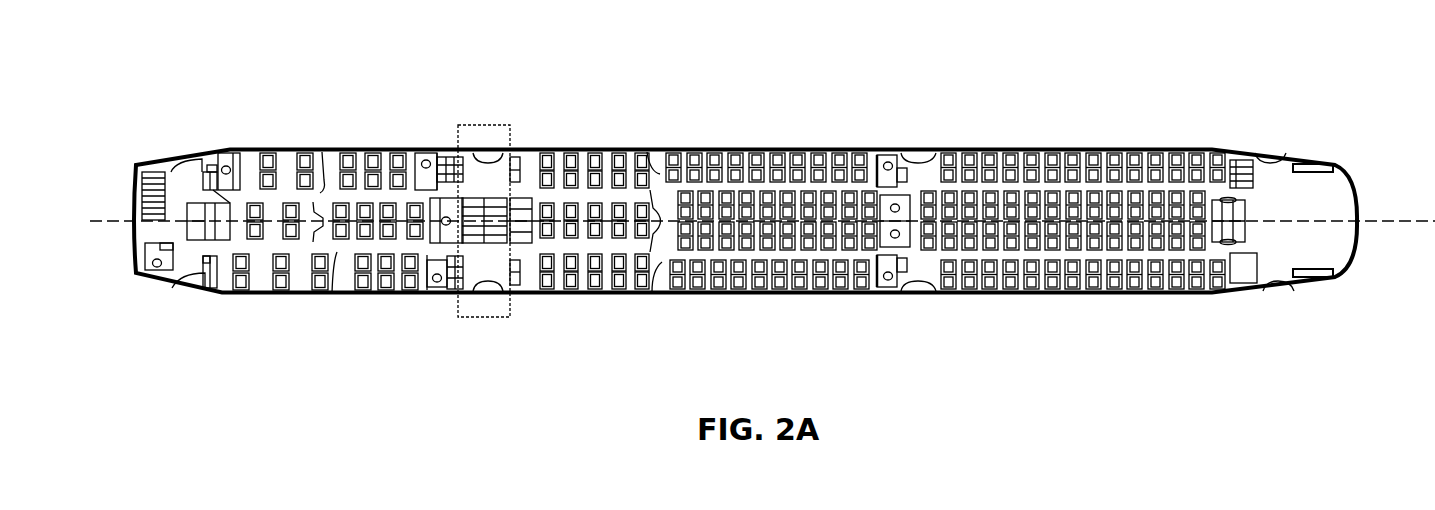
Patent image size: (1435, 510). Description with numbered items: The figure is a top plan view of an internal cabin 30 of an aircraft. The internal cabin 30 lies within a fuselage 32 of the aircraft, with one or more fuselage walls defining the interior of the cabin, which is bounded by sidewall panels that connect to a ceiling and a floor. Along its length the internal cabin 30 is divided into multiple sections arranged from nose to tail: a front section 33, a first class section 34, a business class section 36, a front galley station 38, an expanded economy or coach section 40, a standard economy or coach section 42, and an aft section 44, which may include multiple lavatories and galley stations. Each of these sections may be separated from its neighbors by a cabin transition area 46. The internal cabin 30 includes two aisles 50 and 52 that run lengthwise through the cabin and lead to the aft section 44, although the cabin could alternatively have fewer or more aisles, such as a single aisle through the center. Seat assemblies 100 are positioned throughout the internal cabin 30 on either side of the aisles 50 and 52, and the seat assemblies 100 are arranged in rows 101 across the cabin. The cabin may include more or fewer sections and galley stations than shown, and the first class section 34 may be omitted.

The internal cabin 30 is at (278, 56).
The fuselage 32 is at (605, 112).
The front section 33 is at (198, 304).
The first class section 34 is at (289, 295).
The business class section 36 is at (362, 148).
The front galley station 38 is at (483, 308).
The expanded economy or coach section 40 is at (583, 295).
The standard economy or coach section 42 is at (715, 150).
The aft section 44 is at (1280, 178).
The cabin transition area 46 is at (210, 148).
The aisle 50 is at (1075, 185).
The aisle 52 is at (1093, 253).
The seat assemblies 100 is at (838, 155).
The rows 101 is at (836, 149).